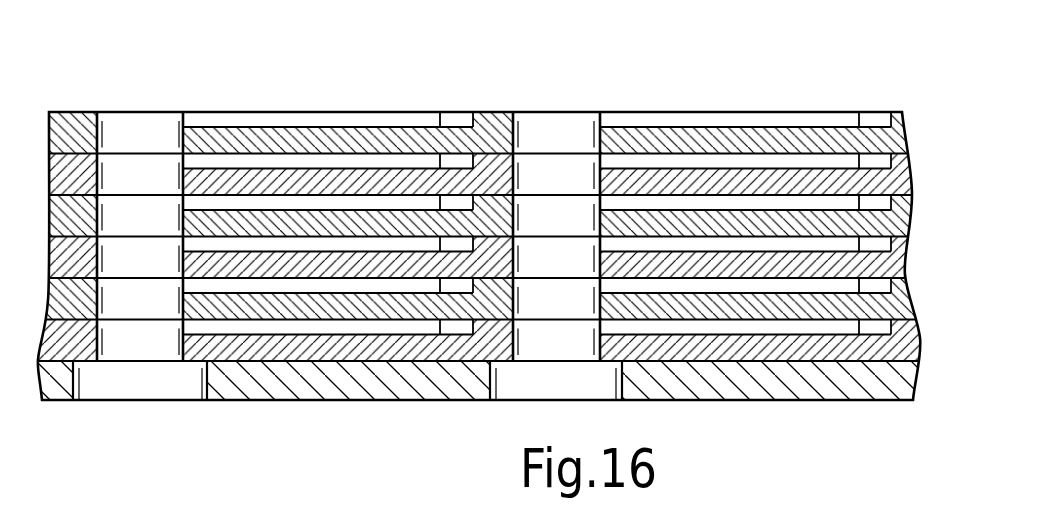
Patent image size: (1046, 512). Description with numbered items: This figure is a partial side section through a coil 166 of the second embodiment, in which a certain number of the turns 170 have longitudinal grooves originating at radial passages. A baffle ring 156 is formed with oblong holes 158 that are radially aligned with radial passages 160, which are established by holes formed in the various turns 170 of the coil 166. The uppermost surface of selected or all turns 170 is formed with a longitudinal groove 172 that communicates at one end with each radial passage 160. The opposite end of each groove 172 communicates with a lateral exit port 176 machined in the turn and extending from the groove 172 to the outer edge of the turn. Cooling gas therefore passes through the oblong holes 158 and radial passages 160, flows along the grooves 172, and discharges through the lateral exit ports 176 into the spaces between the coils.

The baffle ring 156 is at (303, 386).
The oblong holes 158 is at (162, 380).
The radial passages 160 is at (128, 175).
The coil 166 is at (783, 76).
The turns 170 is at (495, 118).
The longitudinal groove 172 is at (281, 118).
The lateral exit port 176 is at (453, 118).